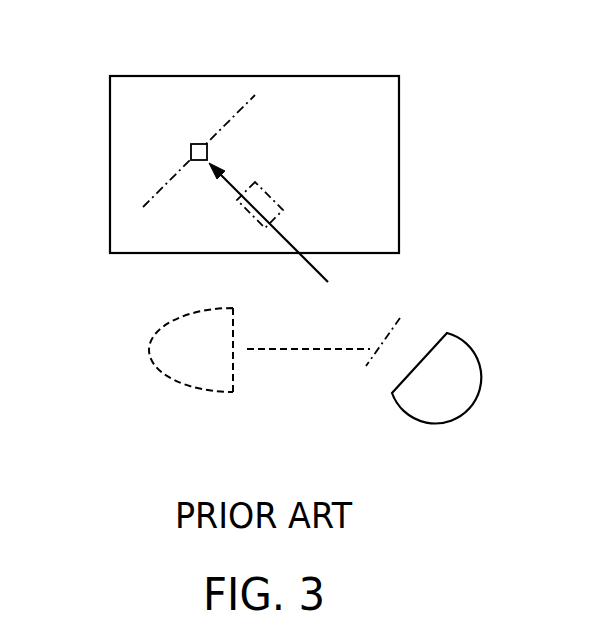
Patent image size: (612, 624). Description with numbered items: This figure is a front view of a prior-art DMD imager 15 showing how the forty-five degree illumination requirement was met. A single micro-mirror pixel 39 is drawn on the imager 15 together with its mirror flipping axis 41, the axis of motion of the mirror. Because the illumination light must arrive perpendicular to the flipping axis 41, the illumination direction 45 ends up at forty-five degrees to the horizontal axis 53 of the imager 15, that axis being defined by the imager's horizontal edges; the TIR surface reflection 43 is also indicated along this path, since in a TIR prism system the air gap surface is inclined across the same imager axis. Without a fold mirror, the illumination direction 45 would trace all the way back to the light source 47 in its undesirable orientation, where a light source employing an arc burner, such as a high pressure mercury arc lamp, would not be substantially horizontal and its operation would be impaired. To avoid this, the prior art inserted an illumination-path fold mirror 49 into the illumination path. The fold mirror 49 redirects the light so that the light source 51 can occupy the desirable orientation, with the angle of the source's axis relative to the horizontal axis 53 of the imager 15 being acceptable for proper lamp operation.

The imager 15 is at (132, 218).
The single micro-mirror pixel 39 is at (198, 144).
The mirror flipping axis 41 is at (227, 125).
The TIR surface reflection 43 is at (257, 205).
The illumination direction 45 is at (306, 259).
The light source in undesirable orientation 47 is at (448, 401).
The illumination-path fold mirror 49 is at (387, 343).
The light source in desirable orientation 51 is at (185, 368).
The horizontal axis of the imager 53 is at (352, 253).